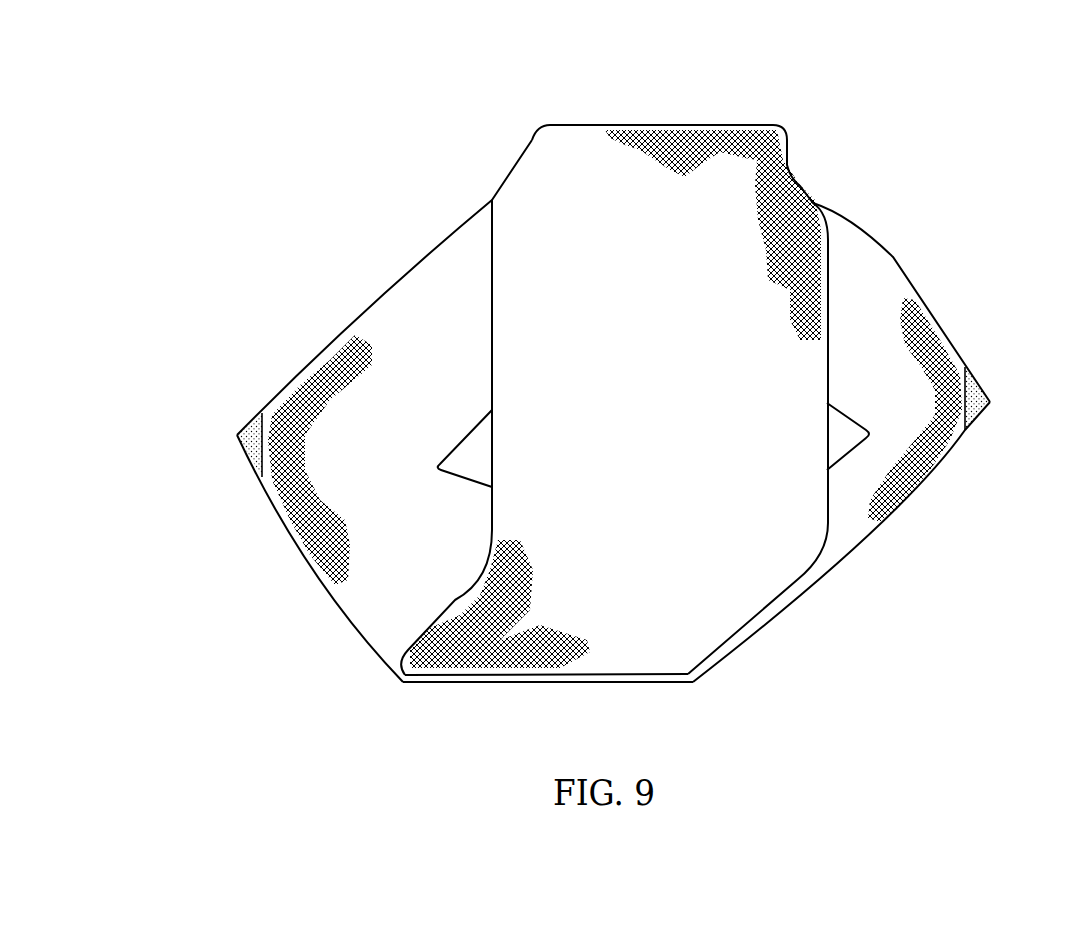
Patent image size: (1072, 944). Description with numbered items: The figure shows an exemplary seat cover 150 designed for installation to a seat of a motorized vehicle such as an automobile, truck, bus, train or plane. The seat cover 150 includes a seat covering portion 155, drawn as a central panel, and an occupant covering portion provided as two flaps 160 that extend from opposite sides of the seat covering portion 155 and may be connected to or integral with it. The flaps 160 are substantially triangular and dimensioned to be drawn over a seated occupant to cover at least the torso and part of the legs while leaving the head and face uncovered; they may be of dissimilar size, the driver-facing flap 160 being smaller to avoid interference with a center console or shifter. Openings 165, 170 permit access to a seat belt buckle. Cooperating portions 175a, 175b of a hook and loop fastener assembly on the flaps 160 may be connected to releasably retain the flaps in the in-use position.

The seat cover 150 is at (386, 171).
The seat covering portion 155 is at (608, 660).
The flaps 160 is at (402, 303).
The opening 165 is at (458, 449).
The opening 170 is at (852, 430).
The cooperating portion of hook and loop fastener assembly 175a is at (247, 447).
The cooperating portion of hook and loop fastener assembly 175b is at (978, 410).